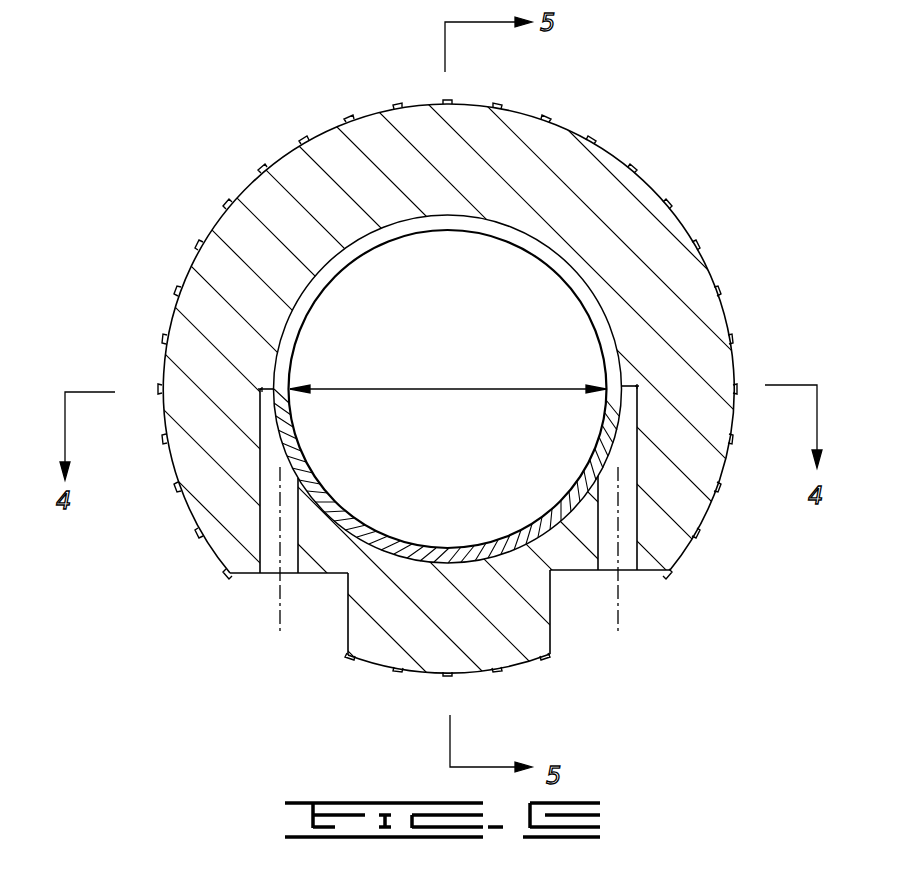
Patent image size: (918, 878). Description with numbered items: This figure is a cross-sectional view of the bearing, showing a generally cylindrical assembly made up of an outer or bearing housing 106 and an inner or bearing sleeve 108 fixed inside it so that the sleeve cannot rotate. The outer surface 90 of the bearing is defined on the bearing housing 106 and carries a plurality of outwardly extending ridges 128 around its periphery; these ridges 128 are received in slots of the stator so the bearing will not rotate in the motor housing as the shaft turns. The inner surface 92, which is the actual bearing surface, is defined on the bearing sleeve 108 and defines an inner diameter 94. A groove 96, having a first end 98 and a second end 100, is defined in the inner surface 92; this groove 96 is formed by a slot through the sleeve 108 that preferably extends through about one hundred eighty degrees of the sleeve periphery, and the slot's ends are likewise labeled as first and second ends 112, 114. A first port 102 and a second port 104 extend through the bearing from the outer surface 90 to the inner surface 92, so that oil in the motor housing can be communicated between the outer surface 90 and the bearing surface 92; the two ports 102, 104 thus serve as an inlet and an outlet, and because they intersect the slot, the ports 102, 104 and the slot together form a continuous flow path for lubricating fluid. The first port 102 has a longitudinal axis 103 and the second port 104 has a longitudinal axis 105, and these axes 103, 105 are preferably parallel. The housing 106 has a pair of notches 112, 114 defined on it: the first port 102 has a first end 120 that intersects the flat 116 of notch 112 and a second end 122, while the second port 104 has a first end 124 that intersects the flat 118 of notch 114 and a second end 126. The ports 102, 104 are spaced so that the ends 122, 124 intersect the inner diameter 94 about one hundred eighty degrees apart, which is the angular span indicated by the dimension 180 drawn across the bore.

The outer surface 90 is at (645, 181).
The inner surface 92 is at (413, 565).
The inner diameter 94 is at (434, 655).
The groove 96 is at (517, 233).
The first end 98 is at (288, 389).
The second end 100 is at (606, 386).
The first port 102 is at (270, 515).
The longitudinal axis 103 is at (277, 613).
The second port 104 is at (630, 517).
The longitudinal axis 105 is at (620, 617).
The bearing housing 106 is at (298, 178).
The bearing sleeve 108 is at (513, 540).
The notch 112 is at (188, 506).
The notch 114 is at (725, 491).
The flat 116 is at (323, 577).
The flat 118 is at (578, 572).
The first end 120 is at (270, 576).
The second end 122 is at (269, 389).
The first end 124 is at (632, 572).
The second end 126 is at (632, 386).
The ridges 128 is at (349, 121).
The 180 degree span 180 is at (454, 387).